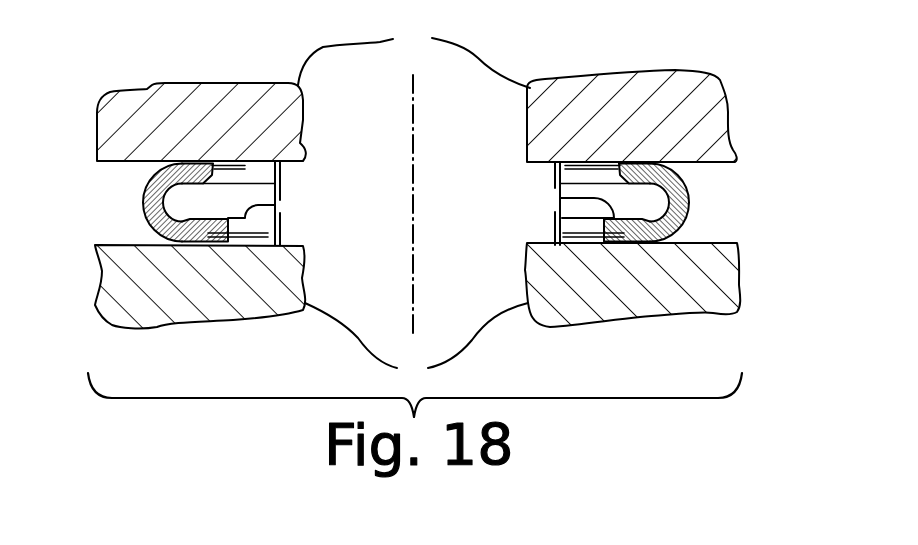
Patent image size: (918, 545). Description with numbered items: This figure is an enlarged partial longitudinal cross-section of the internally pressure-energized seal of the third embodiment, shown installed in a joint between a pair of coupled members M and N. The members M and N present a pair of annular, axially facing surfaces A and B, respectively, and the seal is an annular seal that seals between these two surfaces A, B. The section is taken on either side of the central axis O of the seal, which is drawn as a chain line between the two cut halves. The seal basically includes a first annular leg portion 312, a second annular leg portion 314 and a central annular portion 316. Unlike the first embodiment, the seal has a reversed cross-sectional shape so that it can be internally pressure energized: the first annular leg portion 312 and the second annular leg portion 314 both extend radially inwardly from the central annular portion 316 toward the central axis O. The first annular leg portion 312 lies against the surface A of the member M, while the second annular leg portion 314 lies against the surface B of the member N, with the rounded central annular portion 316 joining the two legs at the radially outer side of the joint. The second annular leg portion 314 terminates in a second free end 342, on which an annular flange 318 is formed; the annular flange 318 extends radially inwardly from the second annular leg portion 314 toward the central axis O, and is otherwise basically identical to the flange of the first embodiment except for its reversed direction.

The first annular leg portion 312 is at (645, 163).
The second annular leg portion 314 is at (648, 242).
The central annular portion 316 is at (690, 207).
The annular flange 318 is at (570, 198).
The second free end 342 is at (250, 220).
The axially facing annular surface A is at (126, 161).
The axially facing annular surface B is at (120, 245).
The member M is at (414, 54).
The member N is at (416, 343).
The central axis O is at (413, 143).